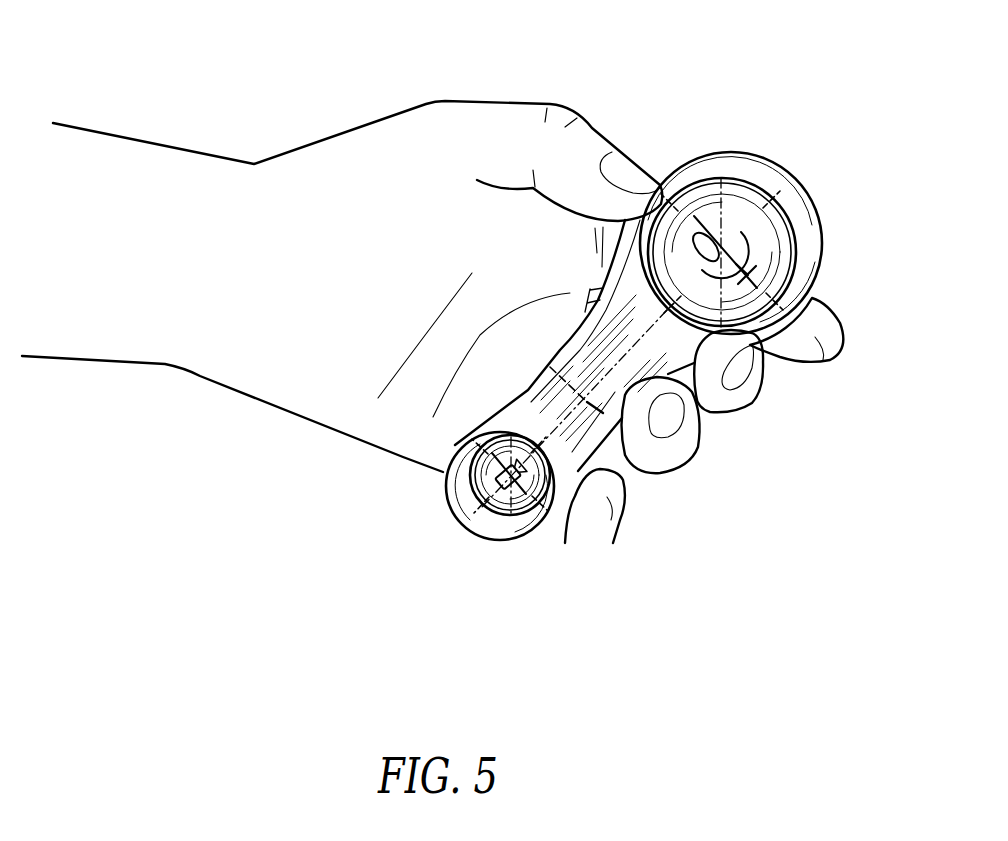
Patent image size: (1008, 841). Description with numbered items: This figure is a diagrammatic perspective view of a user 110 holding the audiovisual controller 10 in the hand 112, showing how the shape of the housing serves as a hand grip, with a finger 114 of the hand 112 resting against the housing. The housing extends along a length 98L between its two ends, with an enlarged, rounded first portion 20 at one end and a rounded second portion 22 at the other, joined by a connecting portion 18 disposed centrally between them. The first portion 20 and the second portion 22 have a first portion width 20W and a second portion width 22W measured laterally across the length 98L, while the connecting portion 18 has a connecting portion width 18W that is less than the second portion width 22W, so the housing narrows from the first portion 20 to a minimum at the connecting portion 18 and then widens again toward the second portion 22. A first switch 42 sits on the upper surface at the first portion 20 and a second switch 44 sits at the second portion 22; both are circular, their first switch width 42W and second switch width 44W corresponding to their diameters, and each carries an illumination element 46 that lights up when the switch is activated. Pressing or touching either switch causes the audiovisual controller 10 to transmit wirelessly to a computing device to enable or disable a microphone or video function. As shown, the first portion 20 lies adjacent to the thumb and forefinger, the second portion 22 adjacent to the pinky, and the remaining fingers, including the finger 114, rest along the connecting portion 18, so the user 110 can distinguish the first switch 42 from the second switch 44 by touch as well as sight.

The audiovisual controller 10 is at (818, 110).
The connecting portion 18 is at (612, 392).
The connecting portion width 18W is at (628, 470).
The first portion 20 is at (715, 167).
The first portion width 20W is at (785, 322).
The second portion 22 is at (507, 523).
The second portion width 22W is at (550, 517).
The first switch 42 is at (746, 193).
The first switch width 42W is at (731, 187).
The second switch 44 is at (520, 500).
The second switch width 44W is at (492, 437).
The illumination element 46 is at (793, 230).
The length 98L is at (778, 194).
The user 110 is at (172, 172).
The hand 112 is at (362, 257).
The finger 114 is at (823, 360).